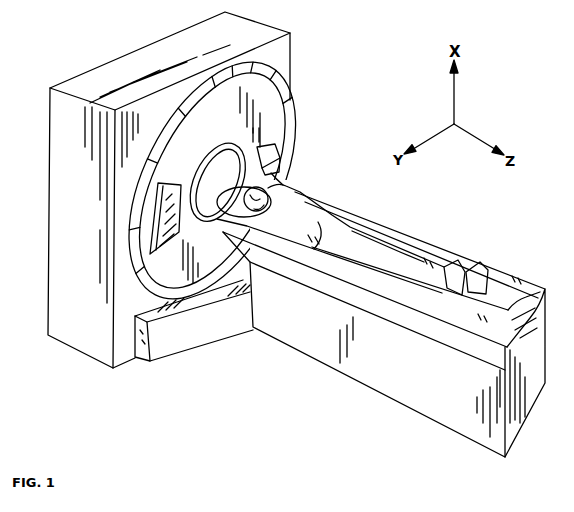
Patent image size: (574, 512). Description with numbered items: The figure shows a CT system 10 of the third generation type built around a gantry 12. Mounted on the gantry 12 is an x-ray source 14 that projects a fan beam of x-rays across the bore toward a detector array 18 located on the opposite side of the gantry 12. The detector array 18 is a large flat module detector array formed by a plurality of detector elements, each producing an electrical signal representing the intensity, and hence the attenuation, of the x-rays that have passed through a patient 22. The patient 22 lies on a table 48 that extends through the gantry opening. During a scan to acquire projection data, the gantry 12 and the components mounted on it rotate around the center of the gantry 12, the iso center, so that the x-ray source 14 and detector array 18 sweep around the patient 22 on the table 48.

The CT system 10 is at (236, 327).
The gantry 12 is at (70, 118).
The x-ray source 14 is at (282, 162).
The detector array 18 is at (180, 236).
The patient 22 is at (312, 200).
The motorized table 48 is at (305, 332).